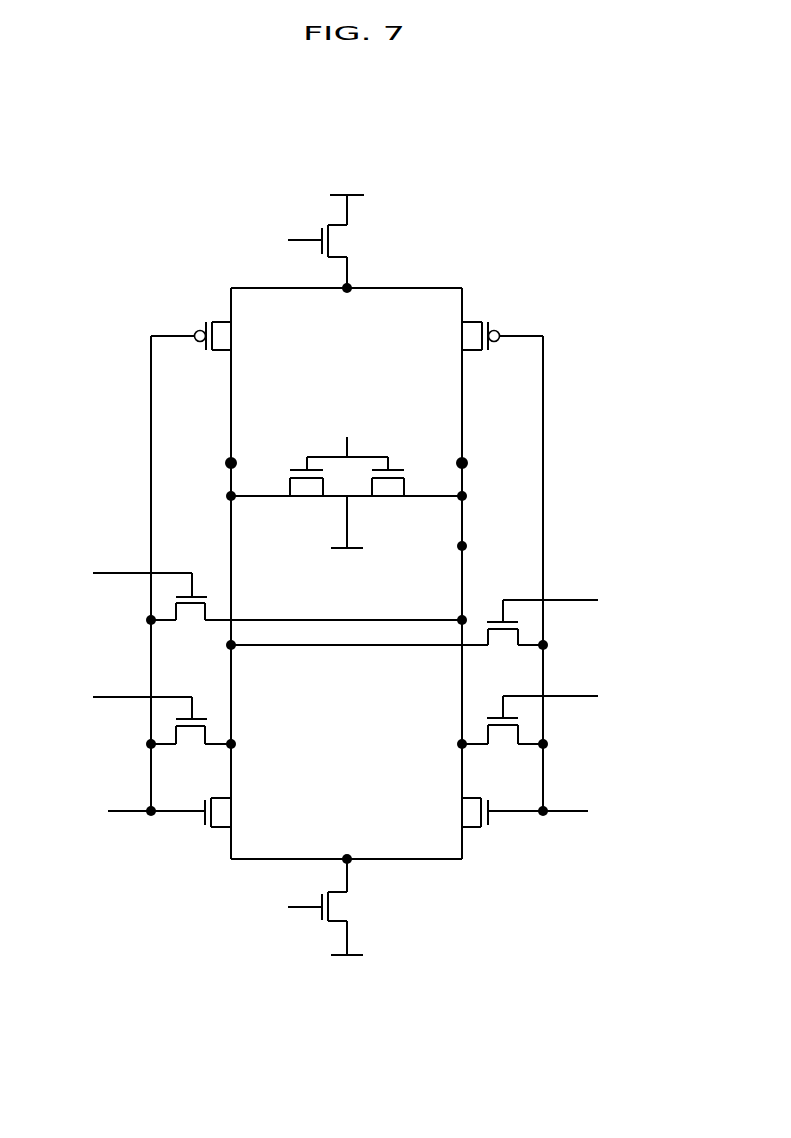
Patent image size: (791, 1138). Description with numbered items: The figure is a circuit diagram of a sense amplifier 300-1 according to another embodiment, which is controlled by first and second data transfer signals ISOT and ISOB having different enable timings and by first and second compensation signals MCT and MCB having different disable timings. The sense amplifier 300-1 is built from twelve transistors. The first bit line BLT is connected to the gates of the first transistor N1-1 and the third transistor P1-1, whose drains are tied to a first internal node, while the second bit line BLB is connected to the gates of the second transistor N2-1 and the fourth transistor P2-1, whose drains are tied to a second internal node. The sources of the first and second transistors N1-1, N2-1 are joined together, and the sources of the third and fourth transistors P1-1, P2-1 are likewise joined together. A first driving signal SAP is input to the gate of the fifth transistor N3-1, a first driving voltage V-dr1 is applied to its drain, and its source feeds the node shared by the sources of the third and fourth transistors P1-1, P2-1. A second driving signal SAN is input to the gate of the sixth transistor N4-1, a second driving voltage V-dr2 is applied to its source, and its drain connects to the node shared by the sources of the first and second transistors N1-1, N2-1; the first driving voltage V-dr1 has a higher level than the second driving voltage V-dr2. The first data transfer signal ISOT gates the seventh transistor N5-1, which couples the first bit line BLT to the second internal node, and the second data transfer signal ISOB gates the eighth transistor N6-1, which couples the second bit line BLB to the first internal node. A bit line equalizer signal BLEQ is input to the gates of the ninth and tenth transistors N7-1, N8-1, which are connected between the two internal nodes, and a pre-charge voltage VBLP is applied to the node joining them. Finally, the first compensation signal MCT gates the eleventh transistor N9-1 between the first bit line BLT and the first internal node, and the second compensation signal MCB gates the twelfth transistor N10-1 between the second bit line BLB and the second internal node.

The sense amplifier 300-1 is at (575, 152).
The fifth transistor N3-1 is at (356, 241).
The sixth transistor N4-1 is at (356, 907).
The third transistor P1-1 is at (212, 336).
The fourth transistor P2-1 is at (484, 336).
The first transistor N1-1 is at (239, 812).
The second transistor N2-1 is at (458, 812).
The seventh transistor N5-1 is at (306, 622).
The eighth transistor N6-1 is at (387, 648).
The ninth transistor N7-1 is at (304, 497).
The tenth transistor N8-1 is at (386, 497).
The eleventh transistor N9-1 is at (191, 746).
The twelfth transistor N10-1 is at (502, 745).
The first driving voltage V-dr1 is at (346, 182).
The second driving voltage V-dr2 is at (346, 968).
The first driving signal SAP is at (284, 241).
The second driving signal SAN is at (283, 908).
The bit line equalizer signal BLEQ is at (347, 440).
The pre-charge voltage VBLP is at (347, 536).
The first data transfer signal ISOT is at (117, 580).
The second data transfer signal ISOB is at (576, 605).
The first compensation signal MCT is at (119, 702).
The second compensation signal MCB is at (573, 701).
The first bit line BLT is at (136, 811).
The second bit line BLB is at (555, 811).